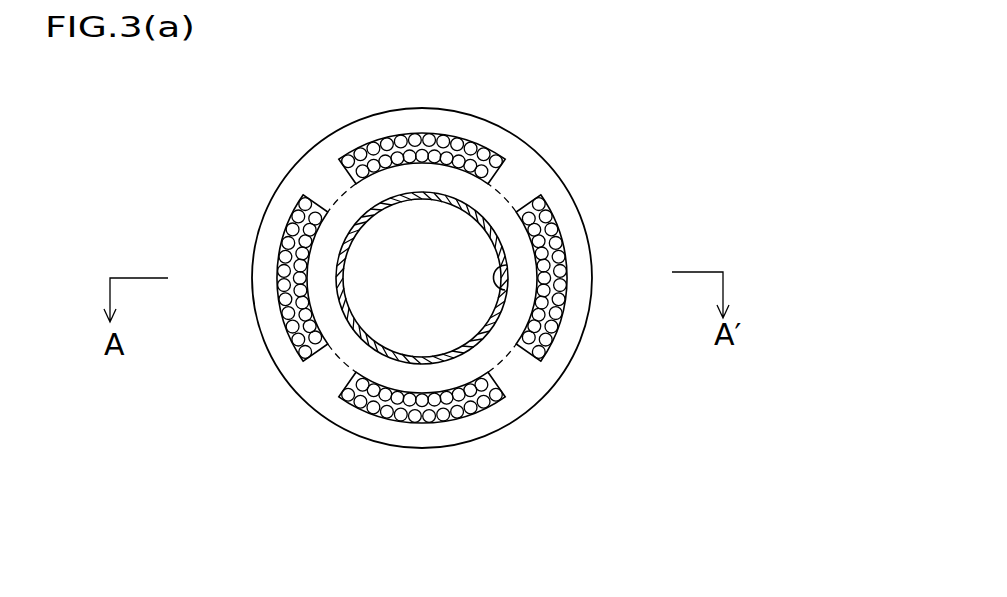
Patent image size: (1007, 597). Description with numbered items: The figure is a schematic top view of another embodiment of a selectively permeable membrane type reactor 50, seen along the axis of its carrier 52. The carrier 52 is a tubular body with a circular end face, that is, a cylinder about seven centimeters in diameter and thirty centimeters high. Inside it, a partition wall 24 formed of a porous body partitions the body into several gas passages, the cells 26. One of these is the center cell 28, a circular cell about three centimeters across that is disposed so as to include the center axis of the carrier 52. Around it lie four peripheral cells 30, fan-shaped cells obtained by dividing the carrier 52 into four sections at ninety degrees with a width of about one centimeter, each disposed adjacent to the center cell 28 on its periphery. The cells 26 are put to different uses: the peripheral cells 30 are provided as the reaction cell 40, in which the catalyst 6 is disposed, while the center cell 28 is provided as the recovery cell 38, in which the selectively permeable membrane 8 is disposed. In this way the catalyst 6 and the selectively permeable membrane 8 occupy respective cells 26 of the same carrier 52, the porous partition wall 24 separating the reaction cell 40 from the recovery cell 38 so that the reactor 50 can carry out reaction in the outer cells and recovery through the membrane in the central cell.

The catalyst 6 is at (415, 140).
The selectively permeable membrane 8 is at (507, 264).
The partition wall 24 is at (355, 205).
The cells 26 is at (422, 330).
The center cell 28 is at (344, 341).
The peripheral cells 30 is at (422, 295).
The recovery cell 38 is at (400, 303).
The reaction cell 40 is at (277, 250).
The selectively permeable membrane type reactor 50 is at (507, 264).
The carrier 52 is at (482, 135).